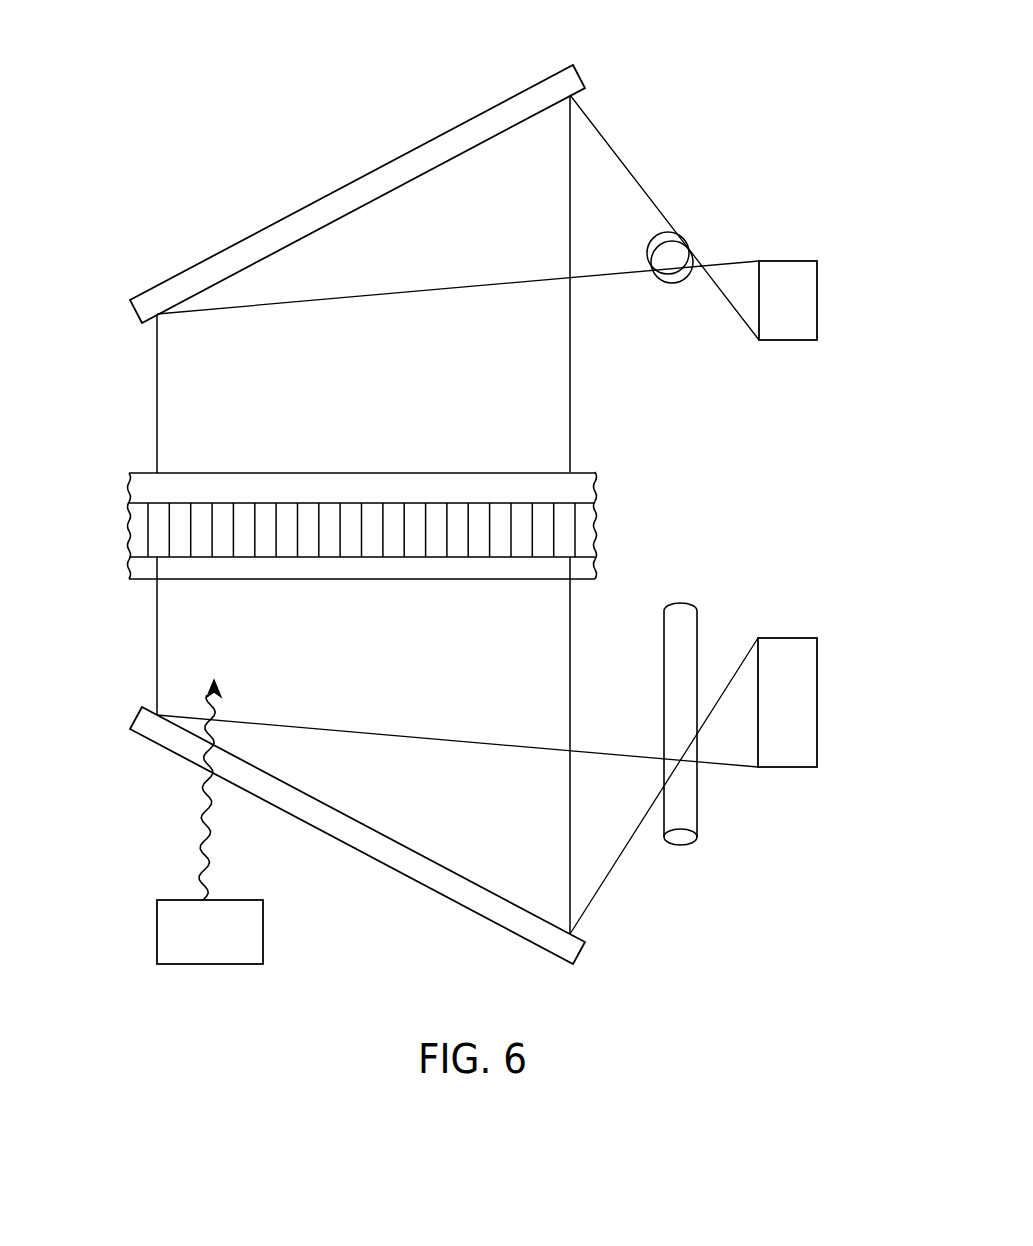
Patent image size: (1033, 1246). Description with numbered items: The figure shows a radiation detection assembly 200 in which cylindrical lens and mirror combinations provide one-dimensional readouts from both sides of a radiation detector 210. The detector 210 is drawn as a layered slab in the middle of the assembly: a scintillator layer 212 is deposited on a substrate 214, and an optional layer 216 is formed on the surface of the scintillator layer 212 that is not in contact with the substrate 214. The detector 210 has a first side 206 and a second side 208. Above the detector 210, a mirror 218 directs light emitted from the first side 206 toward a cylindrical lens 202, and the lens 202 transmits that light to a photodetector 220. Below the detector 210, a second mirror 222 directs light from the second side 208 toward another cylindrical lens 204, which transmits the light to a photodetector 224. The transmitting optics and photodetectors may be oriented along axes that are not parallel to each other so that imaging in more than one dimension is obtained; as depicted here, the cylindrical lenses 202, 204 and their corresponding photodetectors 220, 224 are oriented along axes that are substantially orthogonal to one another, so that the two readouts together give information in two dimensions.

The radiation detection assembly 200 is at (690, 66).
The cylindrical lens 202 is at (680, 233).
The cylindrical lens 204 is at (698, 827).
The first side 206 is at (583, 470).
The second side 208 is at (583, 580).
The radiation detector 210 is at (612, 525).
The scintillator layer 212 is at (129, 527).
The substrate 214 is at (129, 577).
The layer 216 is at (129, 473).
The mirror 218 is at (335, 188).
The photodetector 220 is at (798, 260).
The mirror 222 is at (397, 873).
The photodetector 224 is at (783, 770).